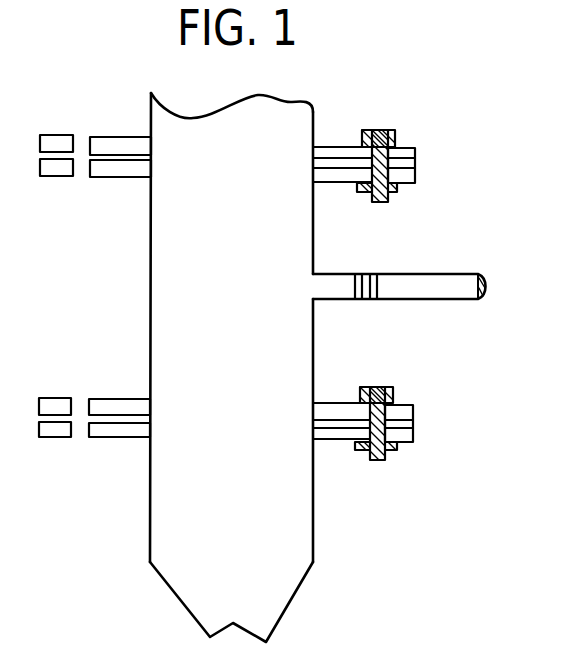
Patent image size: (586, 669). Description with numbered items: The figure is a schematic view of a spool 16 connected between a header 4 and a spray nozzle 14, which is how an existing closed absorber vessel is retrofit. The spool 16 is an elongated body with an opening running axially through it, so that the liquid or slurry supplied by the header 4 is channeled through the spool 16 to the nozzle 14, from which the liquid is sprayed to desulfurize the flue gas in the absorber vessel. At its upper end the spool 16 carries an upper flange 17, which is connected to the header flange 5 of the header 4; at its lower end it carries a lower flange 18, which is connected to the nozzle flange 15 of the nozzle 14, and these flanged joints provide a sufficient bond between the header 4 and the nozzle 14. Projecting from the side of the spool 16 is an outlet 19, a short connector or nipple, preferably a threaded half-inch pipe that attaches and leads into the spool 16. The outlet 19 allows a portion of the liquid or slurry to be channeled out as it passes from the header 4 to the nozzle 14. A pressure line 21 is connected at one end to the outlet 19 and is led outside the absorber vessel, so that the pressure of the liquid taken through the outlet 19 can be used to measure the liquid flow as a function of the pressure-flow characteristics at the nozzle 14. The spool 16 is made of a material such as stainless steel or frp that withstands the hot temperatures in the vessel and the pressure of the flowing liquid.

The header 4 is at (293, 133).
The header flange 5 is at (105, 137).
The spray nozzle 14 is at (283, 520).
The nozzle flange 15 is at (405, 445).
The spool 16 is at (167, 302).
The upper flange 17 is at (104, 168).
The lower flange 18 is at (55, 405).
The outlet 19 is at (327, 283).
The pressure line 21 is at (437, 291).